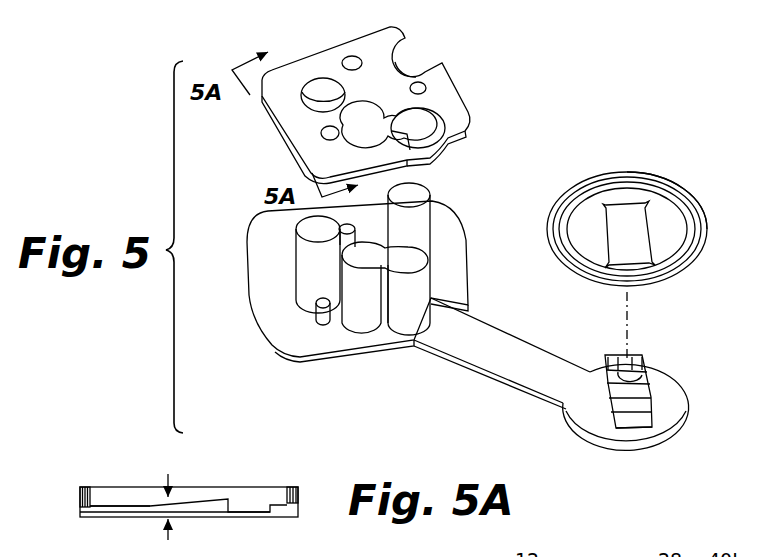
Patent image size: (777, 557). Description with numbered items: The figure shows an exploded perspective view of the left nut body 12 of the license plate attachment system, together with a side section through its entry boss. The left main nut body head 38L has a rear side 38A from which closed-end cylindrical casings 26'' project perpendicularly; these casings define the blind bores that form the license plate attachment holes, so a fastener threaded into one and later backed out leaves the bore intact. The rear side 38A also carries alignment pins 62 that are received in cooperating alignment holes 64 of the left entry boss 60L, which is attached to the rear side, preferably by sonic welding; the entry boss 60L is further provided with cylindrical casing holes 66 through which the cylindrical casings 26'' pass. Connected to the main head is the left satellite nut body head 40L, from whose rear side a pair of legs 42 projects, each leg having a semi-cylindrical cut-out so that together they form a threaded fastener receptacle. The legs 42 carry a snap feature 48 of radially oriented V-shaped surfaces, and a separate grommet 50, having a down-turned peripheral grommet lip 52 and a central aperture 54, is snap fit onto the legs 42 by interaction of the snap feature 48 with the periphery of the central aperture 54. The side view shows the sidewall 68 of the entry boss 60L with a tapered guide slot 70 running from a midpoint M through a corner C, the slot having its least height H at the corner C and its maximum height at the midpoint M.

In FIG. 5, the left nut body 12 is at (300, 379).
In FIG. 5, the closed-end cylindrical casings 26'' is at (346, 259).
In FIG. 5, the rear side of main nut body head 38A is at (278, 323).
In FIG. 5, the left main nut body head 38L is at (470, 290).
In FIG. 5, the left satellite nut body head 40L is at (672, 405).
In FIG. 5, the legs 42 is at (676, 370).
In FIG. 5, the snap feature 48 is at (628, 426).
In FIG. 5, the grommet 50 is at (693, 196).
In FIG. 5, the peripheral grommet lip 52 is at (657, 172).
In FIG. 5, the central aperture 54 is at (610, 224).
In FIG. 5, the left entry boss 60L is at (420, 130).
In FIG. 5A, the left entry boss 60L is at (256, 490).
In FIG. 5, the alignment pins 62 is at (367, 233).
In FIG. 5, the alignment holes 64 is at (351, 56).
In FIG. 5, the cylindrical casing holes 66 is at (420, 58).
In FIG. 5A, the sidewall 68 is at (142, 497).
In FIG. 5A, the guide slot 70 is at (198, 511).
In FIG. 5A, the corner C is at (84, 488).
In FIG. 5A, the midpoint M is at (222, 495).
In FIG. 5A, the least height H is at (168, 508).